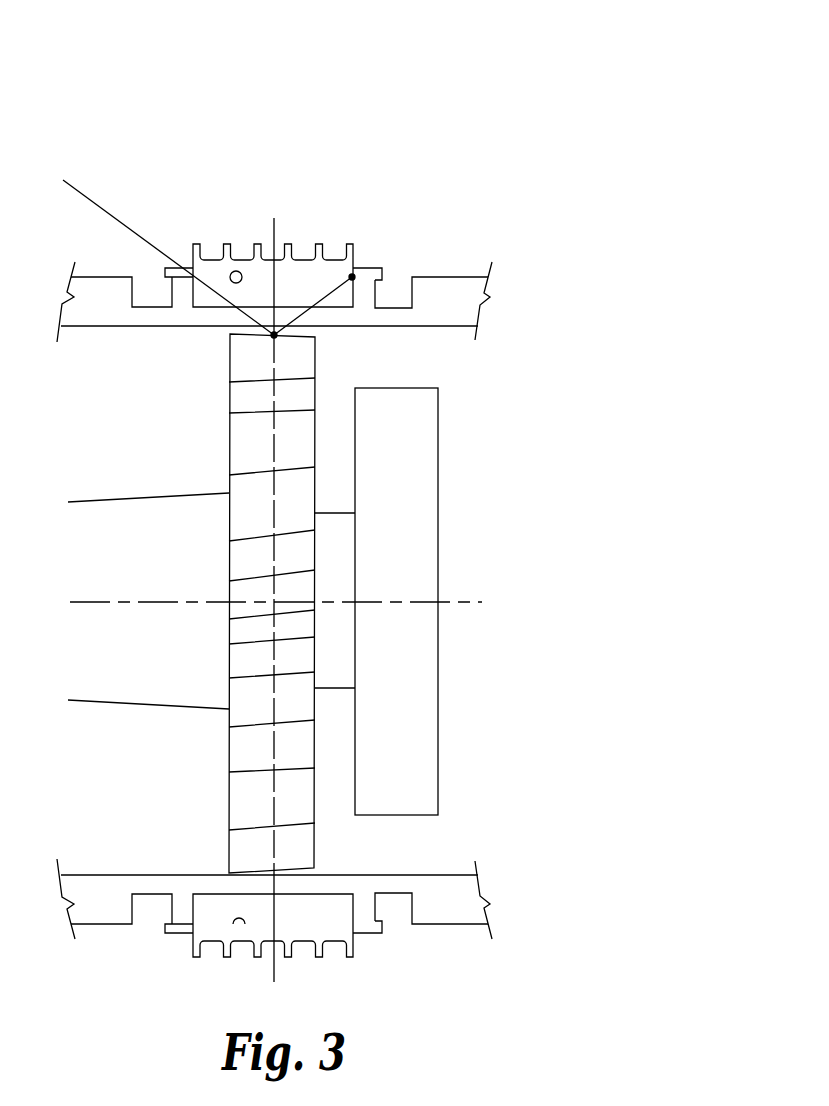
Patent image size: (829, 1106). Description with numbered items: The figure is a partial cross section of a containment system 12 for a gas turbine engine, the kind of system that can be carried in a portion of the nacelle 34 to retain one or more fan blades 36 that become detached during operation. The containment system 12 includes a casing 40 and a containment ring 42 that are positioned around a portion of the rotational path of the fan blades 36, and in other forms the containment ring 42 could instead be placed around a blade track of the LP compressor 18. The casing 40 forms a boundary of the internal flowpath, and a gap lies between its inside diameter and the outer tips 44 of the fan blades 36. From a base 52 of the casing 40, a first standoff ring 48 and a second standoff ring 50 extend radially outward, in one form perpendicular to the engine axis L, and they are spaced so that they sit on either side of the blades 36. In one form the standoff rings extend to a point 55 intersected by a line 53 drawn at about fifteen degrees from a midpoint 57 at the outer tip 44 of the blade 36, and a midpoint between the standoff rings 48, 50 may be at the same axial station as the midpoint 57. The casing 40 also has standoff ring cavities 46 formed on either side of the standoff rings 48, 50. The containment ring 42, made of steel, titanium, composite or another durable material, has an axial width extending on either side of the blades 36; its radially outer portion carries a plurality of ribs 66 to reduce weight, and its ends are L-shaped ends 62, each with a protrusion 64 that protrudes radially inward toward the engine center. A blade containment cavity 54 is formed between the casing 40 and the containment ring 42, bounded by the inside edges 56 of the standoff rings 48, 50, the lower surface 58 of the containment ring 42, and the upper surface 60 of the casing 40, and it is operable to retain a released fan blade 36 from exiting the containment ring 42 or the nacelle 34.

The containment system 12 is at (447, 68).
The LP compressor 18 is at (437, 422).
The nacelle 34 is at (474, 253).
The fan blades 36 is at (298, 368).
The casing 40 is at (84, 328).
The containment ring 42 is at (283, 262).
The outer tips 44 is at (307, 336).
The standoff ring cavities 46 is at (131, 268).
The first standoff ring 48 is at (197, 290).
The second standoff ring 50 is at (352, 275).
The base 52 is at (157, 302).
The line 53 is at (73, 185).
The blade containment cavity 54 is at (316, 290).
The point 55 is at (338, 244).
The inside edges 56 is at (196, 306).
The midpoint 57 is at (264, 575).
The lower surface 58 is at (237, 271).
The upper surface 60 is at (222, 308).
The L-shaped ends 62 is at (366, 268).
The protrusion 64 is at (384, 270).
The ribs 66 is at (228, 246).
The axis L is at (423, 603).